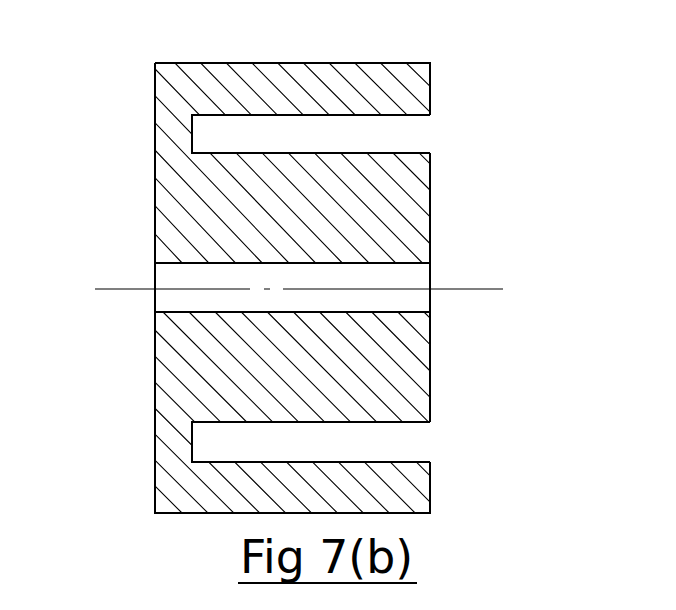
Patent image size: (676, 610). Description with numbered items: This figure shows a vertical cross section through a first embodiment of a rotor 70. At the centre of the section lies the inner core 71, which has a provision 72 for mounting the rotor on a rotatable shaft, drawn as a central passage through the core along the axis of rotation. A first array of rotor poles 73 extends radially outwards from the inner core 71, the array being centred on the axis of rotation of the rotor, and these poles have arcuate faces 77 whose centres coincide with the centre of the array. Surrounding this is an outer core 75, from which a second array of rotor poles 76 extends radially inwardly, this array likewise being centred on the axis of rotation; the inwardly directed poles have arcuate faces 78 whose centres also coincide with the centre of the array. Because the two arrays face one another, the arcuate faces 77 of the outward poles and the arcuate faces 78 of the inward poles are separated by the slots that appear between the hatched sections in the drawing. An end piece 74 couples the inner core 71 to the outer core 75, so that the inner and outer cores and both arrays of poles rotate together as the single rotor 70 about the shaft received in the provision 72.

The rotor 70 is at (154, 487).
The inner core 71 is at (370, 197).
The provision for mounting on a rotatable shaft 72 is at (404, 316).
The first array of rotor poles 73 is at (397, 170).
The end piece 74 is at (175, 130).
The outer core 75 is at (374, 68).
The second array of rotor poles 76 is at (411, 108).
The arcuate faces 77 is at (378, 422).
The arcuate faces 78 is at (362, 116).